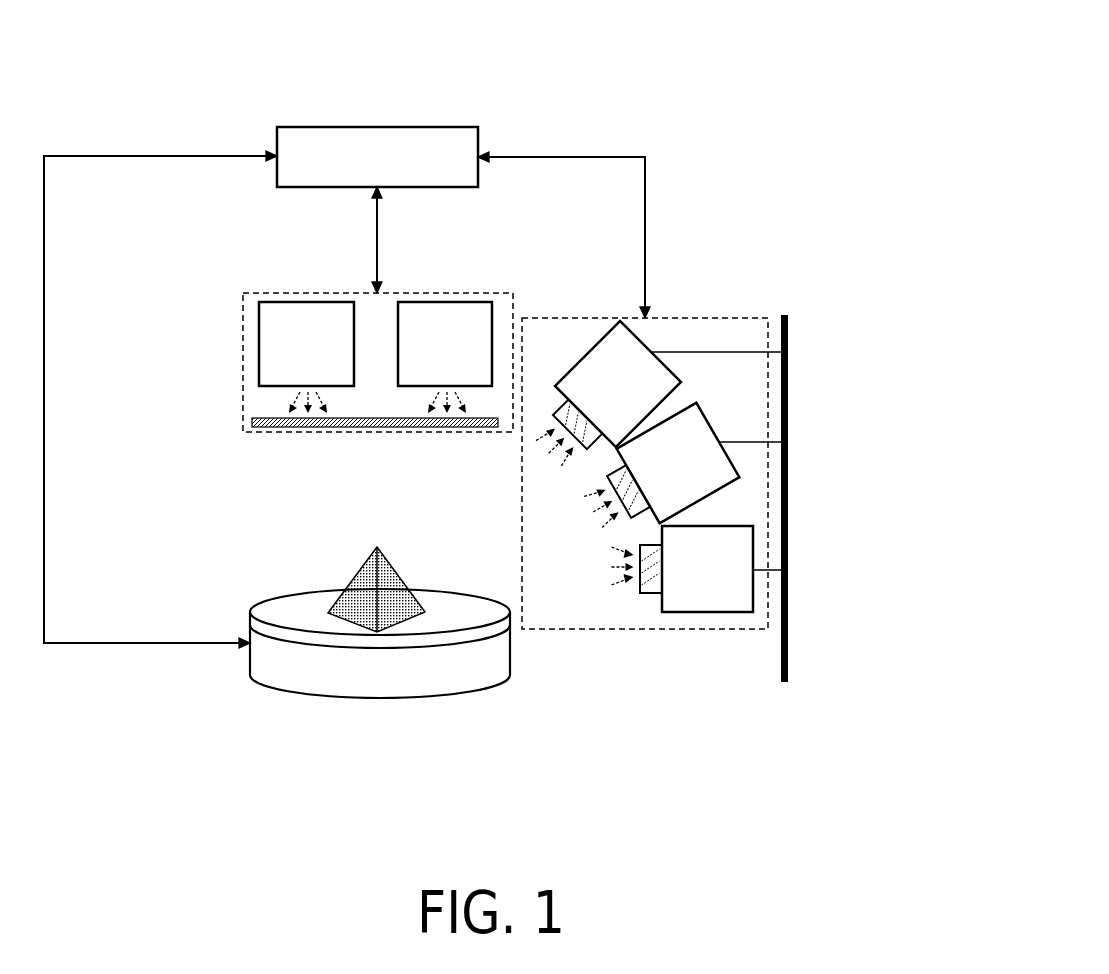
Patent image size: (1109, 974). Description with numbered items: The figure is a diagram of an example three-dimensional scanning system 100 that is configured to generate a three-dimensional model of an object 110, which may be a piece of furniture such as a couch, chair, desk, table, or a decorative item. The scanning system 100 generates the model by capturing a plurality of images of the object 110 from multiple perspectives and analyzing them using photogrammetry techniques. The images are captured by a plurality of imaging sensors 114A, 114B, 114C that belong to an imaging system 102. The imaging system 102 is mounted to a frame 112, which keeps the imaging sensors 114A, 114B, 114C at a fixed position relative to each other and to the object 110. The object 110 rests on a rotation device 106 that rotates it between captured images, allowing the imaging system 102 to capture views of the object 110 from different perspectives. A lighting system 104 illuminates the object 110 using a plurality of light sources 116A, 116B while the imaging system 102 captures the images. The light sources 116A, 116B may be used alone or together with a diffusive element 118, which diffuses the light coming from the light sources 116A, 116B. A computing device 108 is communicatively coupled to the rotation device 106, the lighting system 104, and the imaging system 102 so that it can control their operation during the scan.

The 3D scanning system 100 is at (848, 68).
The imaging system 102 is at (745, 318).
The lighting system 104 is at (243, 362).
The rotation device 106 is at (380, 700).
The computing device 108 is at (396, 154).
The object 110 is at (355, 578).
The frame 112 is at (790, 467).
The imaging sensor 114A is at (599, 402).
The imaging sensor 114B is at (656, 476).
The imaging sensor 114C is at (683, 569).
The light source 116A is at (333, 324).
The light source 116B is at (472, 324).
The diffusive element 118 is at (252, 423).